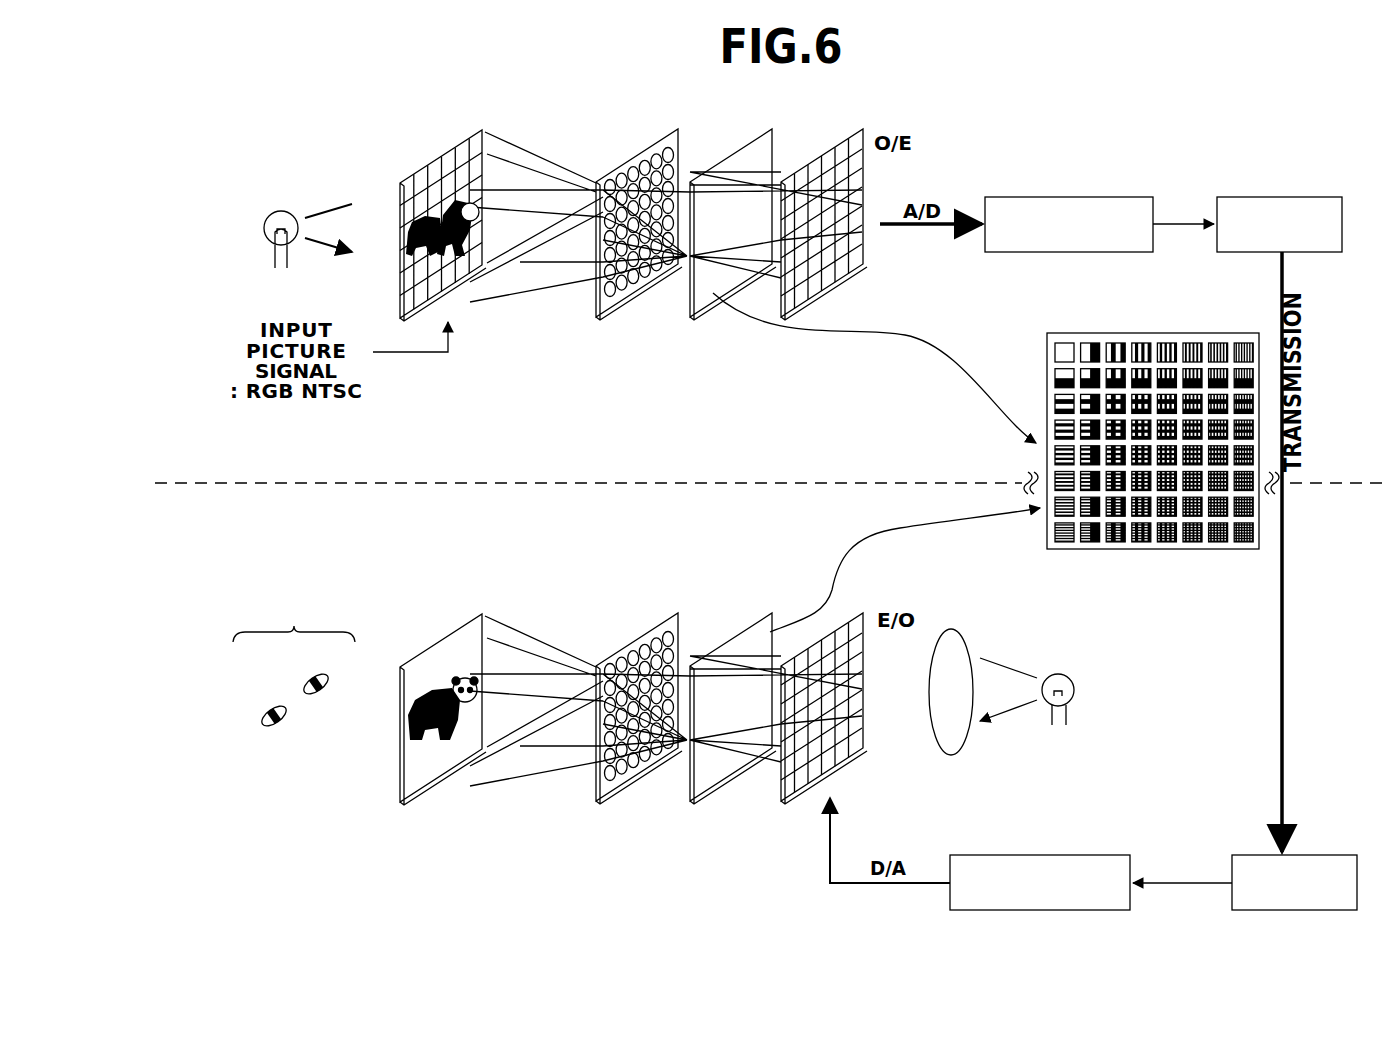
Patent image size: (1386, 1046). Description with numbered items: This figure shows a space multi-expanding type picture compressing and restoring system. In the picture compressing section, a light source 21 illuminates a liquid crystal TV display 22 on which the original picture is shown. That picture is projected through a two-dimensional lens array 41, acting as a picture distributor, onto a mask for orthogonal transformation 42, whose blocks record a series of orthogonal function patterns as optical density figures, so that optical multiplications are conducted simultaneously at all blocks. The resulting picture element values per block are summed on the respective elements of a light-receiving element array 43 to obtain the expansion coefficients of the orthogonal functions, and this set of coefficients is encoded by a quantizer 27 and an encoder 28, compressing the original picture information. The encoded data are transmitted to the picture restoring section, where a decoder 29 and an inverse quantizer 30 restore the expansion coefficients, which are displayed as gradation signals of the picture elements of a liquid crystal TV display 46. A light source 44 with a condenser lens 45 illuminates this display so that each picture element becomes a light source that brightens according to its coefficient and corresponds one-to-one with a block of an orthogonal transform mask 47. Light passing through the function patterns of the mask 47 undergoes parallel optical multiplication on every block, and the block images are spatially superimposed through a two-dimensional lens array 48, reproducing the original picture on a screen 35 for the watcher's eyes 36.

The light source 21 is at (274, 218).
The liquid crystal TV display 22 is at (428, 165).
The two-dimensional lens array 41 is at (620, 160).
The mask for orthogonal transformation 42 is at (740, 152).
The light-receiving element array 43 is at (843, 155).
The quantizer 27 is at (1070, 196).
The encoder 28 is at (1296, 196).
The decoder 29 is at (1325, 854).
The inverse quantizer 30 is at (1095, 854).
The screen 35 is at (432, 645).
The watcher's eyes 36 is at (294, 660).
The light source 44 is at (1075, 682).
The condenser lens 45 is at (967, 643).
The liquid crystal TV display 46 is at (832, 765).
The orthogonal transform mask 47 is at (757, 643).
The two-dimensional lens array 48 is at (628, 648).